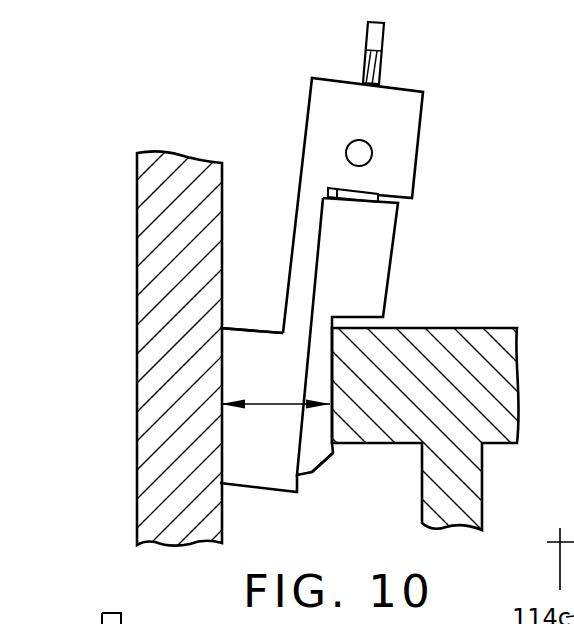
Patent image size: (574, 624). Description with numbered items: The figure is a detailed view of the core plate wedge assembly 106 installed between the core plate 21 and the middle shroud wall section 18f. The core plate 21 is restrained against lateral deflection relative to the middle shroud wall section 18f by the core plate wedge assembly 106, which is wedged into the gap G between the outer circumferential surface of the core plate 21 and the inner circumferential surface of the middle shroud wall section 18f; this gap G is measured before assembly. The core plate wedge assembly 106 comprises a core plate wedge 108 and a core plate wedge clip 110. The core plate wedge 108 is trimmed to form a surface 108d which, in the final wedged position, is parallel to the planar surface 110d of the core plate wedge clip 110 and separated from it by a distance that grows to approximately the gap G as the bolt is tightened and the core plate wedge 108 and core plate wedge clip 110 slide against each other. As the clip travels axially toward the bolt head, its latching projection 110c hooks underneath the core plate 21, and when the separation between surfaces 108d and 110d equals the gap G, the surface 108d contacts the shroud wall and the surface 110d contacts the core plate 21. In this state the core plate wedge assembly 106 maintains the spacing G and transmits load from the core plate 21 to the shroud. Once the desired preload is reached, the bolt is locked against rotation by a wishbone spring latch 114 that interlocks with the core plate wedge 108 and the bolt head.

The middle shroud wall section 18f is at (137, 283).
The core plate 21 is at (498, 328).
The core plate wedge assembly 106 is at (428, 47).
The core plate wedge 108 is at (308, 110).
The surface of core plate wedge 108d is at (222, 352).
The core plate wedge clip 110 is at (390, 262).
The latching projection 110c is at (338, 450).
The planar surface of core plate wedge clip 110d is at (332, 377).
The wishbone spring latch 114 is at (366, 33).
The gap G is at (282, 402).